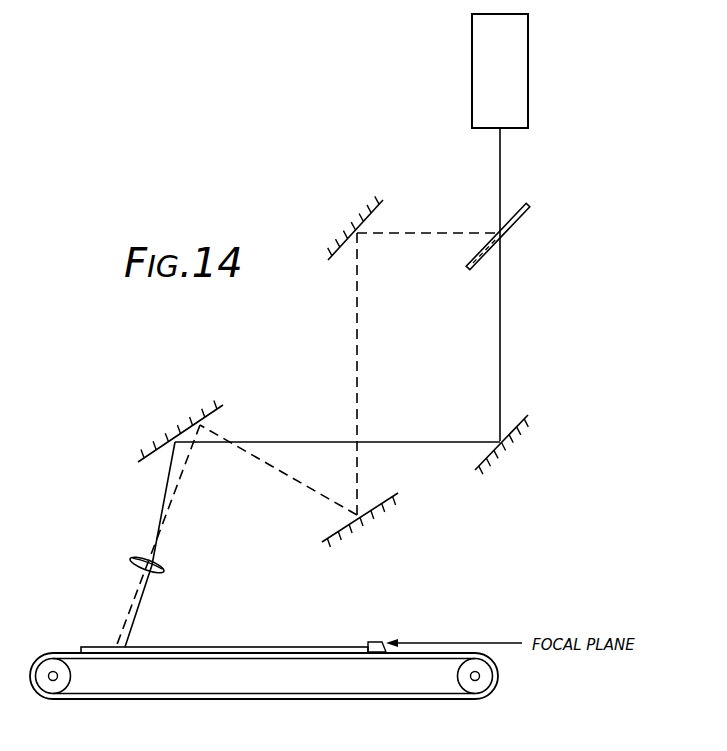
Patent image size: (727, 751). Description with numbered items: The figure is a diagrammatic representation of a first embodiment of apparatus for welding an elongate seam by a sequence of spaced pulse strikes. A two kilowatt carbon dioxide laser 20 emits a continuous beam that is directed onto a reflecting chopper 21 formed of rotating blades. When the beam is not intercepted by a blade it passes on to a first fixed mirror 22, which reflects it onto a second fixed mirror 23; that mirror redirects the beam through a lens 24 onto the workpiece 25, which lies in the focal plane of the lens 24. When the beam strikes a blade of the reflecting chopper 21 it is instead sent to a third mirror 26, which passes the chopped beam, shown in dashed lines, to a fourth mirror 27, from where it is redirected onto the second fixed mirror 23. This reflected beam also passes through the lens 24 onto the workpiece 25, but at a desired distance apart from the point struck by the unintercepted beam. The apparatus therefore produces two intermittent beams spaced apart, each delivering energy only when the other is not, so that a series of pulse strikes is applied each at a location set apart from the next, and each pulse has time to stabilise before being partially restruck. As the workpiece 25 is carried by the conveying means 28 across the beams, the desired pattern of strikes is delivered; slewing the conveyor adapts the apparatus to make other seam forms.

The carbon dioxide laser 20 is at (508, 67).
The reflecting chopper 21 is at (518, 222).
The first fixed mirror 22 is at (508, 448).
The second fixed mirror 23 is at (163, 440).
The lens 24 is at (128, 566).
The workpiece 25 is at (228, 647).
The third mirror 26 is at (350, 232).
The fourth mirror 27 is at (364, 522).
The conveying means 28 is at (488, 672).